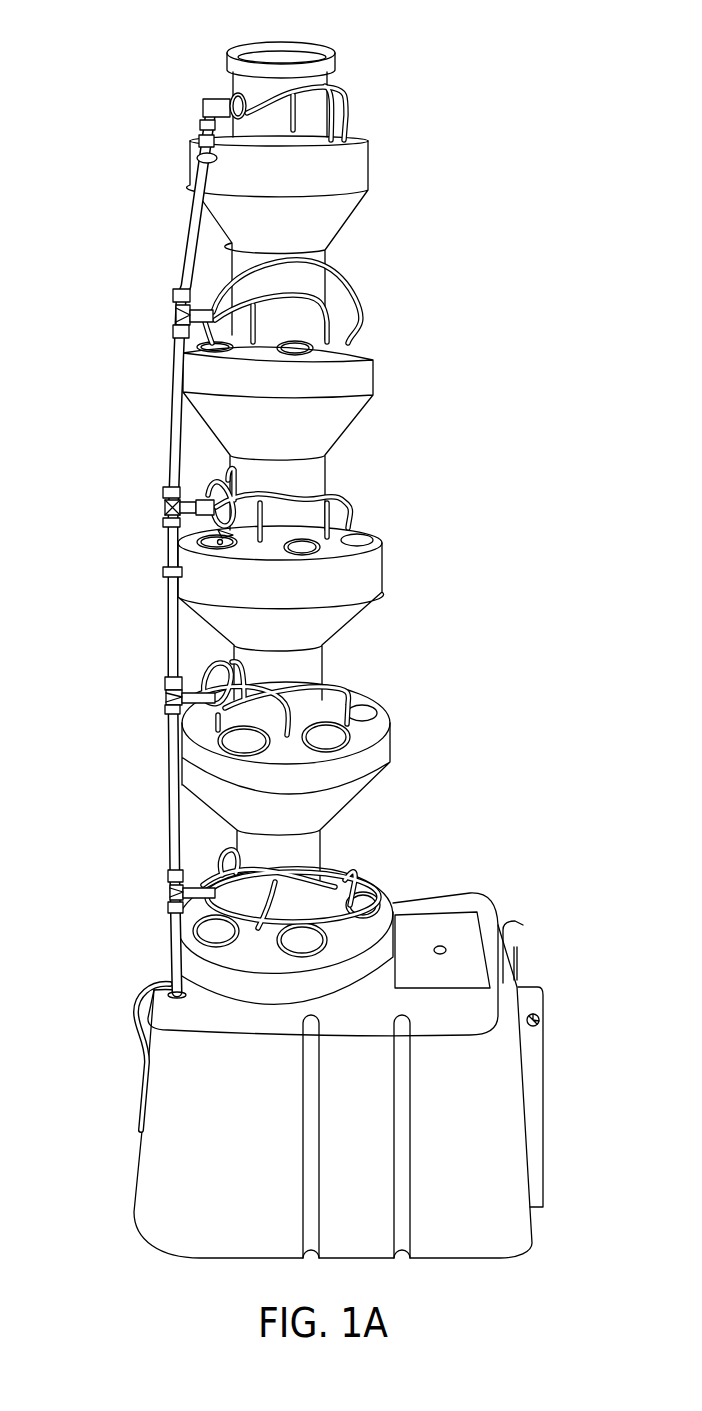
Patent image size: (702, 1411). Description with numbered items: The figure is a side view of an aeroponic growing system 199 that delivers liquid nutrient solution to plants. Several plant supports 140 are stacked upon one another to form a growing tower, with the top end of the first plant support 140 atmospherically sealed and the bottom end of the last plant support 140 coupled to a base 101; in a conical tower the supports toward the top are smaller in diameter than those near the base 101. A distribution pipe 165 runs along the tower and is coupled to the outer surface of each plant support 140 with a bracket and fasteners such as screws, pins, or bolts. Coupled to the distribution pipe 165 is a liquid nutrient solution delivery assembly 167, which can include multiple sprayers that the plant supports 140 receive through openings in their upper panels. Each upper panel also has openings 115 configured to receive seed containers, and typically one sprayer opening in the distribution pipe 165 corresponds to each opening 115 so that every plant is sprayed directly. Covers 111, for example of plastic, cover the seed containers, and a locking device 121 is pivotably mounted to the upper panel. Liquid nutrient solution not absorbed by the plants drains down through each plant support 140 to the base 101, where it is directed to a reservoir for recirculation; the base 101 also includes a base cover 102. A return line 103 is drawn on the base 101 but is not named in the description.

The aeroponic growing system 199 is at (106, 126).
The plant support 140 is at (358, 180).
The opening 115 is at (298, 357).
The locking device 121 is at (270, 337).
The distribution pipe 165 is at (190, 243).
The liquid nutrient solution delivery assembly 167 is at (156, 317).
The cover 111 is at (215, 547).
The base 101 is at (157, 1100).
The base cover 102 is at (468, 932).
The return hose 103 is at (150, 997).